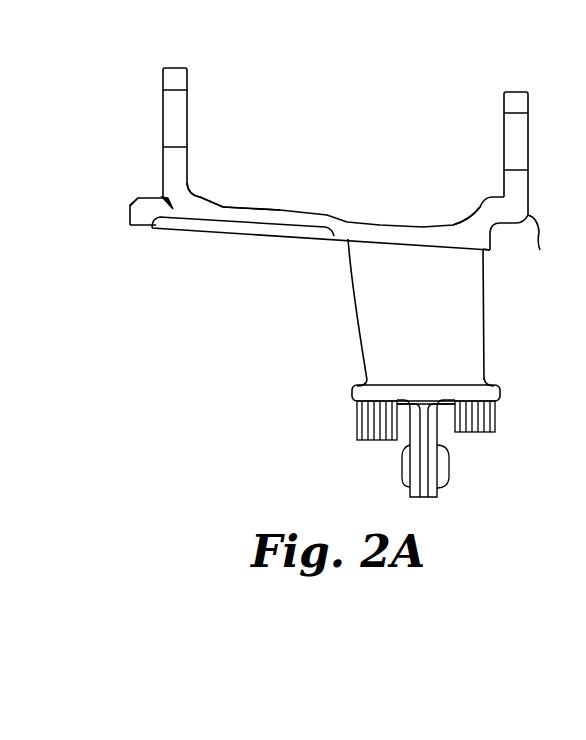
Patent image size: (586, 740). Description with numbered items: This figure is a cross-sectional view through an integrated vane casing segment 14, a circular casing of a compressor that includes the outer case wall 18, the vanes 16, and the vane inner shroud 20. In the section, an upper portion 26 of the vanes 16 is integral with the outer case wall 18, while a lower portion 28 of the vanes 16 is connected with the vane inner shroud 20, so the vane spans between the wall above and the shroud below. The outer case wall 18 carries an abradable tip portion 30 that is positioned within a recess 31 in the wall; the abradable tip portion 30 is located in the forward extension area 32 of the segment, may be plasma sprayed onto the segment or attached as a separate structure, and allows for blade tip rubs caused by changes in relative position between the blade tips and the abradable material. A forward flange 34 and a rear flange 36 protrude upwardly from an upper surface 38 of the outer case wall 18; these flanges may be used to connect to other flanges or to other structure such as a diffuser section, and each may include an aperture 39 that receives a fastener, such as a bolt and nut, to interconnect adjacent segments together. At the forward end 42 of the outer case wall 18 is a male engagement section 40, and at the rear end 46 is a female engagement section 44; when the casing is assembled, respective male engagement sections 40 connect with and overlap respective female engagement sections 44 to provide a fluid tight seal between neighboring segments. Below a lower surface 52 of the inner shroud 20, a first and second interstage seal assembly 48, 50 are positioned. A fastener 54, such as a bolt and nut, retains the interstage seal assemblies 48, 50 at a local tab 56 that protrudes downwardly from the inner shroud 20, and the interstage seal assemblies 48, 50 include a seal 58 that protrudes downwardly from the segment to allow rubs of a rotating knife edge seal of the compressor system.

The integrated vane casing segment 14 is at (313, 138).
The vanes 16 is at (413, 318).
The outer case wall 18 is at (330, 215).
The vane inner shroud 20 is at (492, 385).
The upper portion 26 is at (430, 250).
The lower portion 28 is at (363, 381).
The abradable tip portion 30 is at (228, 233).
The recess 31 is at (242, 207).
The forward extension area 32 is at (162, 197).
The forward flange 34 is at (162, 75).
The rear flange 36 is at (528, 100).
The upper surface 38 is at (207, 196).
The aperture 39 is at (170, 120).
The male engagement section 40 is at (142, 218).
The forward end 42 is at (136, 199).
The female engagement section 44 is at (507, 224).
The rear end 46 is at (540, 250).
The first interstage seal assembly 48 is at (405, 438).
The second interstage seal assembly 50 is at (437, 418).
The lower surface 52 is at (505, 408).
The fastener 54 is at (447, 467).
The local tab 56 is at (420, 468).
The seal 58 is at (357, 420).